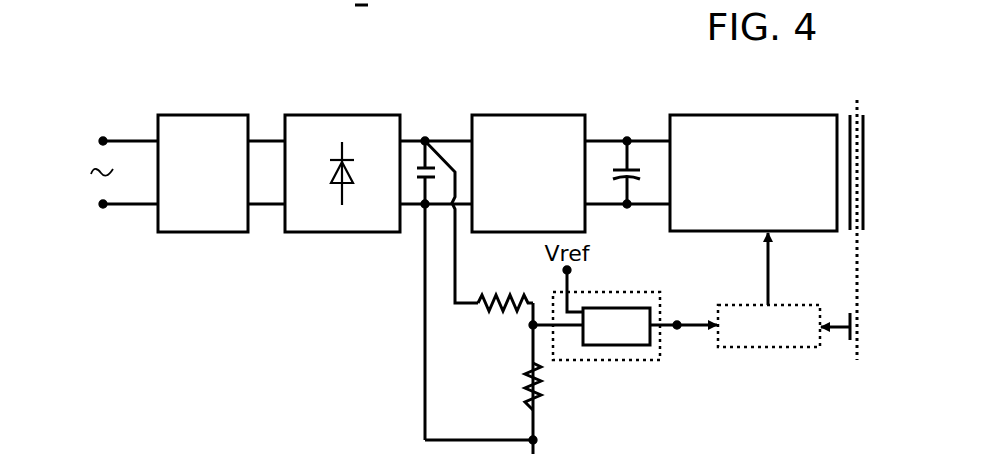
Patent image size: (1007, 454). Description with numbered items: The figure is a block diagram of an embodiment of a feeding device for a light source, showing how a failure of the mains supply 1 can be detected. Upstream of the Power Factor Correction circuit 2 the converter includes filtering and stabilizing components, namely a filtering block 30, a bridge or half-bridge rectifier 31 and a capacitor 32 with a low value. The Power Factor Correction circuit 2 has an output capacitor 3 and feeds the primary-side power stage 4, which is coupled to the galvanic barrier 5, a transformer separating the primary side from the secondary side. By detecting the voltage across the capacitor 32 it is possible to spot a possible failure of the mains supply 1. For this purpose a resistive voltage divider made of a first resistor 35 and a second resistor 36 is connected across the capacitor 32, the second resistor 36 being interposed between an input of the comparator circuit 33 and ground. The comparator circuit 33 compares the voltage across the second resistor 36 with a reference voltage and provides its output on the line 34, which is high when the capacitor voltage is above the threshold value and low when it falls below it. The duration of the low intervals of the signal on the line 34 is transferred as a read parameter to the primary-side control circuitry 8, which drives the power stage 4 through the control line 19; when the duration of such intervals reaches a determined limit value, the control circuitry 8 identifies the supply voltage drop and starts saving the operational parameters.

The mains supply 1 is at (127, 216).
The filtering block 30 is at (203, 115).
The bridge or half-bridge rectifier 31 is at (340, 115).
The capacitor 32 is at (416, 168).
The Power Factor Correction circuit 2 is at (515, 115).
The output capacitor of PFC circuit 3 is at (613, 172).
The power stage 4 is at (788, 115).
The galvanic barrier 5 is at (866, 110).
The control circuitry 8 is at (748, 305).
The control line 19 is at (771, 276).
The comparator circuit 33 is at (608, 308).
The line 34 is at (695, 328).
The first resistor 35 is at (500, 296).
The second resistor 36 is at (527, 390).